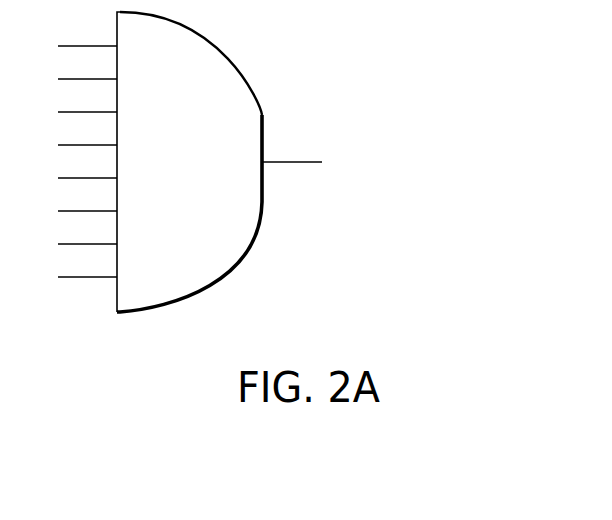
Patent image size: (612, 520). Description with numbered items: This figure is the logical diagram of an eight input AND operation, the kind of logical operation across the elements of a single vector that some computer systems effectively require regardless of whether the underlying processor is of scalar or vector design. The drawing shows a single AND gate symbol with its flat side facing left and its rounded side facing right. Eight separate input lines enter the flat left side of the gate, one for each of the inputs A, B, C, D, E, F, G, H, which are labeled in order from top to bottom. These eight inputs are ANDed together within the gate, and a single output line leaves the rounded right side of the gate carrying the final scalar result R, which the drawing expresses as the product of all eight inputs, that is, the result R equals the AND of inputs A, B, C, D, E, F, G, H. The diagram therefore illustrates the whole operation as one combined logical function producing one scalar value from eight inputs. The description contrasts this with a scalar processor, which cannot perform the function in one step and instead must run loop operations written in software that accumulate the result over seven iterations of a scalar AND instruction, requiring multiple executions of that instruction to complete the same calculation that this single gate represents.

The input A is at (72, 49).
The input B is at (72, 82).
The input C is at (72, 115).
The input D is at (72, 148).
The input E is at (72, 181).
The input F is at (72, 214).
The input G is at (72, 247).
The input H is at (72, 280).
The final scalar result R is at (390, 162).